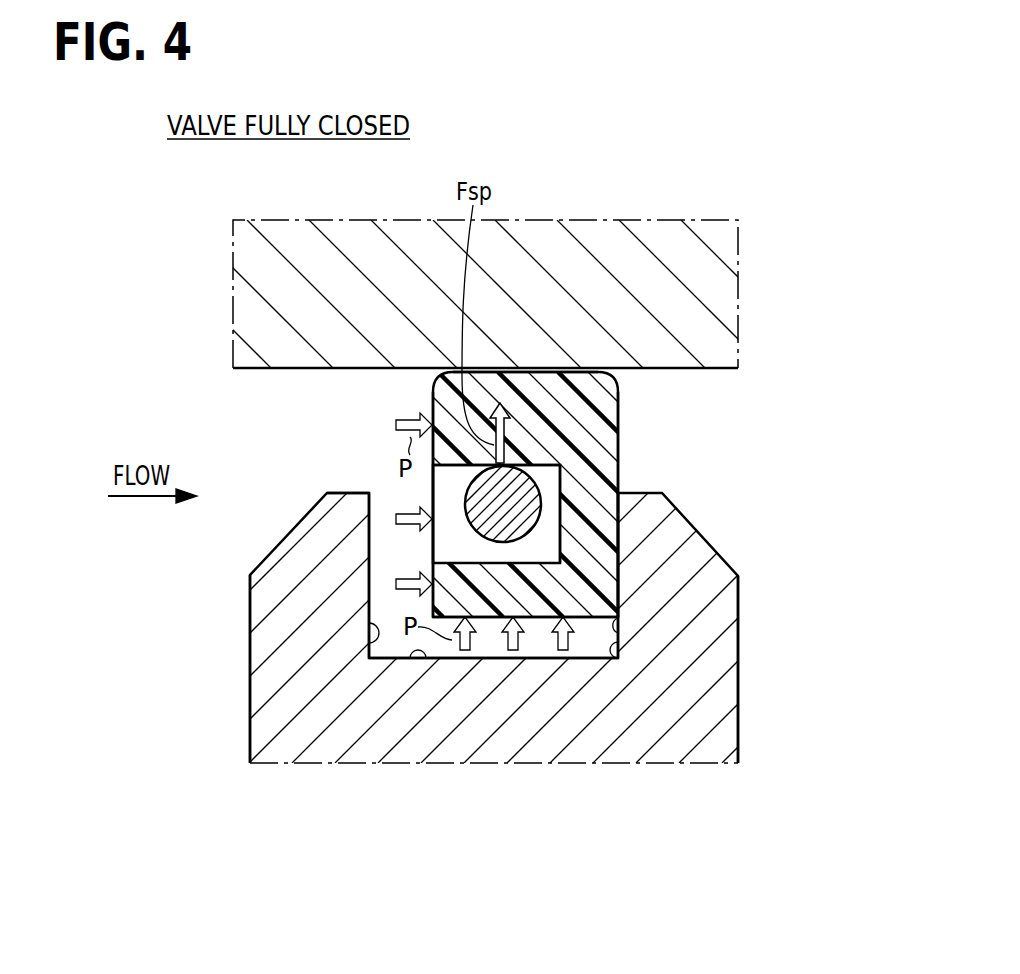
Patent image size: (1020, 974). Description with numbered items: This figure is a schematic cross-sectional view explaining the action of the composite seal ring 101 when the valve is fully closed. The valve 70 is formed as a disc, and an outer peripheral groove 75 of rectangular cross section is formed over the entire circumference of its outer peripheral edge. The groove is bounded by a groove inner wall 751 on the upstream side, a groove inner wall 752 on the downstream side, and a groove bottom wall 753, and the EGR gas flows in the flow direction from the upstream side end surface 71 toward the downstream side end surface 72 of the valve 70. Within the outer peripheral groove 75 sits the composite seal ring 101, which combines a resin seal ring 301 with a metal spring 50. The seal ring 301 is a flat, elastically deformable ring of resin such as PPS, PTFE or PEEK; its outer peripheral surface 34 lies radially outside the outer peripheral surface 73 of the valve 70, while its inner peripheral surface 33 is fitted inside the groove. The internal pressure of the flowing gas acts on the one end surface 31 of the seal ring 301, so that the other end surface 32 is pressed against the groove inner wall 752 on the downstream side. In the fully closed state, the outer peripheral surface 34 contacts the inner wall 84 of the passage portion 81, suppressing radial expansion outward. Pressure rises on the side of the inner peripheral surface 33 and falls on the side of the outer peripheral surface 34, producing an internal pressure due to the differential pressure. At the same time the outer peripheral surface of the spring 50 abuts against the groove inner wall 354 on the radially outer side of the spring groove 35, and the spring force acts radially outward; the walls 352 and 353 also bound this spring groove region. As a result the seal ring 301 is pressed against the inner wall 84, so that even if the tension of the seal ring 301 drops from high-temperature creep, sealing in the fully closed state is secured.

The passage portion 81 is at (673, 248).
The inner wall of the passage portion 84 is at (712, 370).
The valve 70 is at (325, 718).
The upstream side end surface 71 is at (250, 732).
The downstream side end surface 72 is at (738, 730).
The outer peripheral surface of the valve 73 is at (350, 494).
The outer peripheral groove 75 is at (540, 650).
The groove inner wall on the upstream side 751 is at (368, 653).
The groove inner wall on the downstream side 752 is at (602, 662).
The groove bottom wall 753 is at (408, 662).
The composite seal ring 101 is at (515, 494).
The seal ring 301 is at (641, 447).
The spring 50 is at (527, 497).
The one end surface of the seal ring 31 is at (434, 400).
The other end surface of the seal ring 32 is at (620, 412).
The inner peripheral surface of the seal ring 33 is at (618, 633).
The outer peripheral surface of the seal ring 34 is at (540, 373).
The spring groove 35 is at (450, 538).
The recess inner wall 352 is at (562, 522).
The lower lip of seal 353 is at (433, 553).
The groove inner wall on the radially outer side of the spring groove 354 is at (434, 488).